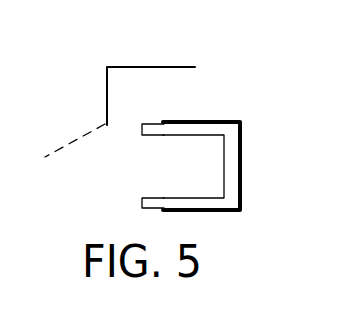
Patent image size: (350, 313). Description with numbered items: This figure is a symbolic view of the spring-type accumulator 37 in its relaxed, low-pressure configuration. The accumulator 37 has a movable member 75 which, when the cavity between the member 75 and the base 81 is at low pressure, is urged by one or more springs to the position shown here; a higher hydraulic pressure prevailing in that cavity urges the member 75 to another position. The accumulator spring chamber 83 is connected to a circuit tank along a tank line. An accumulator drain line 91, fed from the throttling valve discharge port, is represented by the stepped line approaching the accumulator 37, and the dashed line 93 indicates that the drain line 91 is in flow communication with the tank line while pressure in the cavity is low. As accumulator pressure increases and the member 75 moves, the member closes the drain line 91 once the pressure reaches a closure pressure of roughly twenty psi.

The spring-type accumulator 37 is at (228, 92).
The movable member 75 is at (168, 131).
The base 81 is at (243, 127).
The accumulator spring chamber 83 is at (160, 175).
The accumulator drain line 91 is at (152, 66).
The dashed line 93 is at (66, 147).